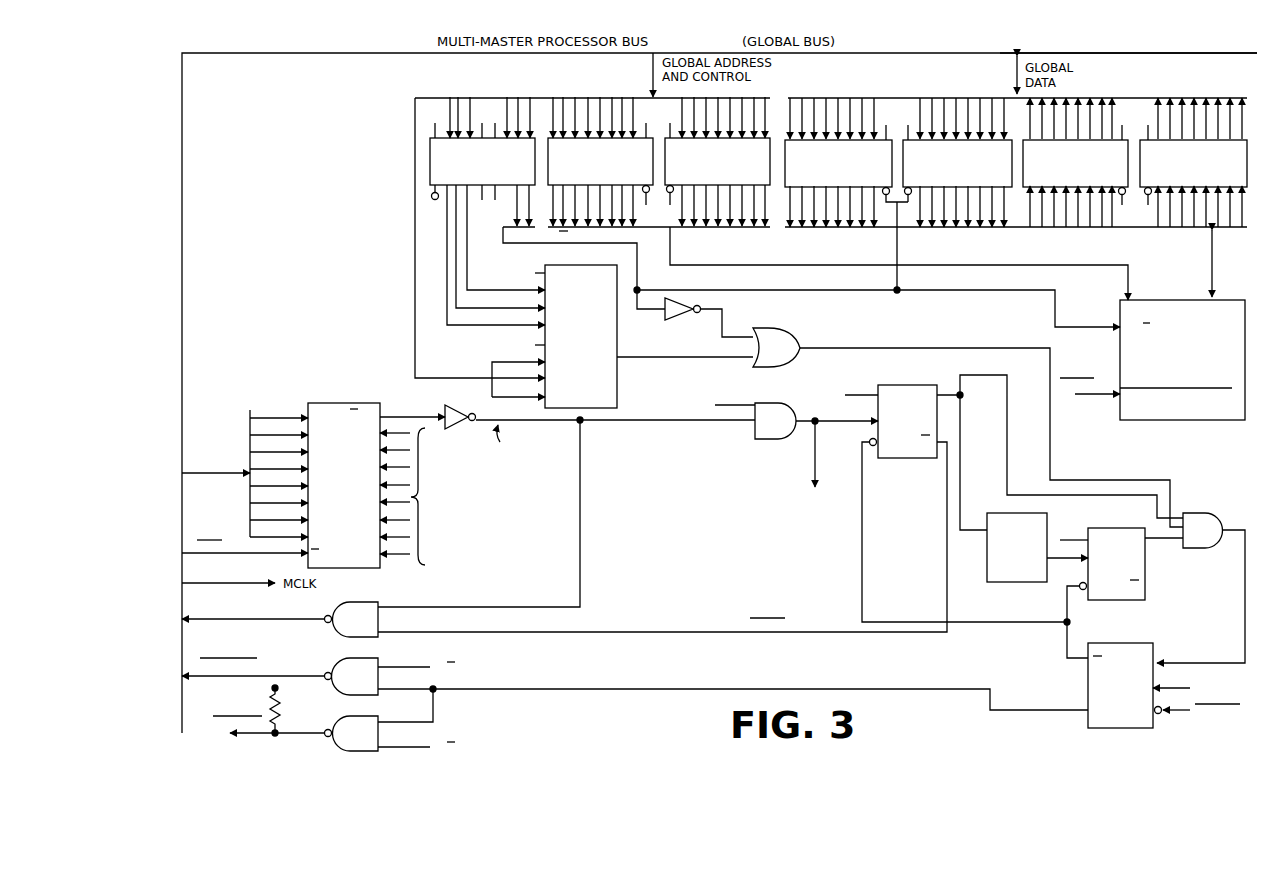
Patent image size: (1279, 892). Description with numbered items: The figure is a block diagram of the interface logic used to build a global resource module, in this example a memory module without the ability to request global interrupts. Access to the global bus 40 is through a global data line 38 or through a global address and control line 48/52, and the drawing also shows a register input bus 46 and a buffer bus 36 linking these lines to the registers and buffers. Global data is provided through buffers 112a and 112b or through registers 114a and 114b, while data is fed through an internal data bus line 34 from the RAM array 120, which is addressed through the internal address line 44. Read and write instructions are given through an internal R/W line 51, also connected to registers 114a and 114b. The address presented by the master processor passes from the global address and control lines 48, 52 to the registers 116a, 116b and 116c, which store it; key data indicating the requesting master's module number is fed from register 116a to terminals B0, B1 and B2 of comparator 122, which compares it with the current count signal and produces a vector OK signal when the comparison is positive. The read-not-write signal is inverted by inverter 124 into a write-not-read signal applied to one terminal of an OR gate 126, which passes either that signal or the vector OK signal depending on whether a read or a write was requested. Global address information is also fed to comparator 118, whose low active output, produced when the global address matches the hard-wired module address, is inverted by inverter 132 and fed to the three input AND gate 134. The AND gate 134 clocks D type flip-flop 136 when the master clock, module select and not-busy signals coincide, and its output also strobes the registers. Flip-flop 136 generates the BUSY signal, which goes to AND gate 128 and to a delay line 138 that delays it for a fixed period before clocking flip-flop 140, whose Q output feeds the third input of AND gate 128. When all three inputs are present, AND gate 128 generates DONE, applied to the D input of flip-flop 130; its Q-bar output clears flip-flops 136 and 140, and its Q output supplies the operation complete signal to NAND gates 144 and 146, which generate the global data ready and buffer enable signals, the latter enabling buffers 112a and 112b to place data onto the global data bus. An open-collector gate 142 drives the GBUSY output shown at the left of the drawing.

The global bus 40 is at (1103, 53).
The global address and control line 52 is at (653, 72).
The global address line 48 is at (248, 470).
The global data line 38 is at (1017, 70).
The register input bus 46 is at (522, 97).
The buffer bus 36 is at (1147, 97).
The internal address line 44 is at (642, 228).
The internal data bus line 34 is at (1150, 230).
The internal R/W line 51 is at (963, 290).
The register 116a is at (482, 161).
The register 116b is at (600, 161).
The register 116c is at (717, 161).
The register 114a is at (846, 195).
The register 114b is at (957, 162).
The buffer 112a is at (1075, 162).
The buffer 112b is at (1193, 162).
The RAM array 120 is at (1150, 300).
The comparator 122 is at (612, 306).
The inverter 124 is at (676, 296).
The OR gate 126 is at (797, 336).
The comparator 118 is at (322, 400).
The inverter 132 is at (455, 427).
The three input AND gate 134 is at (758, 440).
The D type flip-flop 136 is at (880, 460).
The delay line 138 is at (993, 583).
The flip-flop 140 is at (1103, 600).
The AND gate 128 is at (1190, 512).
The flip-flop 130 is at (1105, 728).
The open-collector gate 142 is at (362, 600).
The NAND gate 144 is at (364, 658).
The NAND gate 146 is at (362, 716).